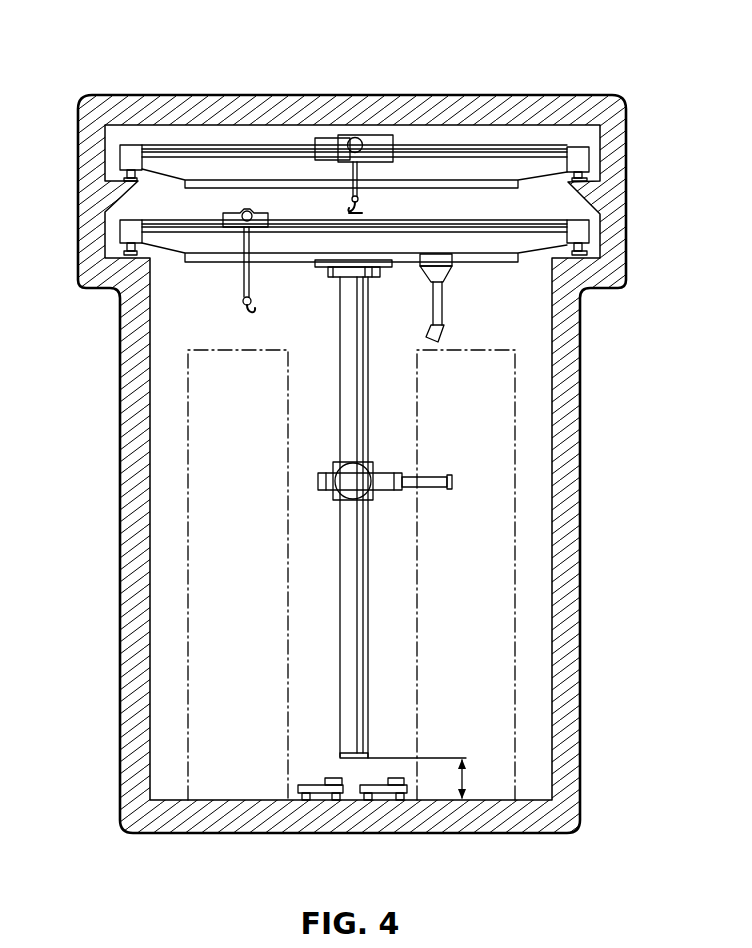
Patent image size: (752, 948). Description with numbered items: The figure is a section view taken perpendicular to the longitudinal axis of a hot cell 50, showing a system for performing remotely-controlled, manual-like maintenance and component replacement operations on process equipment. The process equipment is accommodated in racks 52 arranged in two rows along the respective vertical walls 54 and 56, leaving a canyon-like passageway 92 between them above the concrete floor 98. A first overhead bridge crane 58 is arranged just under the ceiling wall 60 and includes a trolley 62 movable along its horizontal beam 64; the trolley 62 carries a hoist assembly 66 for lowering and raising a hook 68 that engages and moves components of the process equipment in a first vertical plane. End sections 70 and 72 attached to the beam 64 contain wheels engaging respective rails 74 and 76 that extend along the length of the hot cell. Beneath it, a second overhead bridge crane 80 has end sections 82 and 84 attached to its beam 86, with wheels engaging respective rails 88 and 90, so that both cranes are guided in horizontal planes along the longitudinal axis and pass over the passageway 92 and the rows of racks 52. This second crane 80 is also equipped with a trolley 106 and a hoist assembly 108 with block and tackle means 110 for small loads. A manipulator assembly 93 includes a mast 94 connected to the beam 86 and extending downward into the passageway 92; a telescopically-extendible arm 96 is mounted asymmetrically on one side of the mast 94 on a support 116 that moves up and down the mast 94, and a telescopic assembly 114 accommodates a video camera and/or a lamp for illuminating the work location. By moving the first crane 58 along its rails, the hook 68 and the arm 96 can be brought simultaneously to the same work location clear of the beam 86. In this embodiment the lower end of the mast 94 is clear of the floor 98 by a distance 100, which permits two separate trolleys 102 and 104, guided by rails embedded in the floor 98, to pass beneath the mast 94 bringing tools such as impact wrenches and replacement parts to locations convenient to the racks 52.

The hot cell 50 is at (588, 532).
The racks 52 is at (197, 657).
The vertical wall 54 is at (575, 603).
The vertical wall 56 is at (126, 613).
The first overhead bridge crane 58 is at (297, 141).
The ceiling wall 60 is at (230, 113).
The trolley 62 is at (386, 138).
The horizontal beam 64 is at (448, 160).
The hoist assembly 66 is at (355, 138).
The hook 68 is at (361, 214).
The end section 70 is at (128, 145).
The end section 72 is at (575, 148).
The rail 74 is at (121, 179).
The rail 76 is at (588, 179).
The second overhead bridge crane 80 is at (451, 272).
The end section 82 is at (128, 229).
The end section 84 is at (580, 229).
The beam 86 is at (463, 241).
The rail 88 is at (134, 251).
The rail 90 is at (578, 252).
The canyon-like passageway 92 is at (318, 718).
The manipulator assembly 93 is at (338, 340).
The mast 94 is at (357, 406).
The telescopically-extendible arm 96 is at (380, 490).
The floor 98 is at (228, 800).
The distance 100 is at (464, 776).
The trolley 102 is at (323, 794).
The trolley 104 is at (383, 794).
The trolley 106 is at (262, 211).
The hoist assembly 108 is at (241, 214).
The block and tackle means 110 is at (242, 292).
The telescopic assembly 114 is at (433, 279).
The support 116 is at (334, 489).